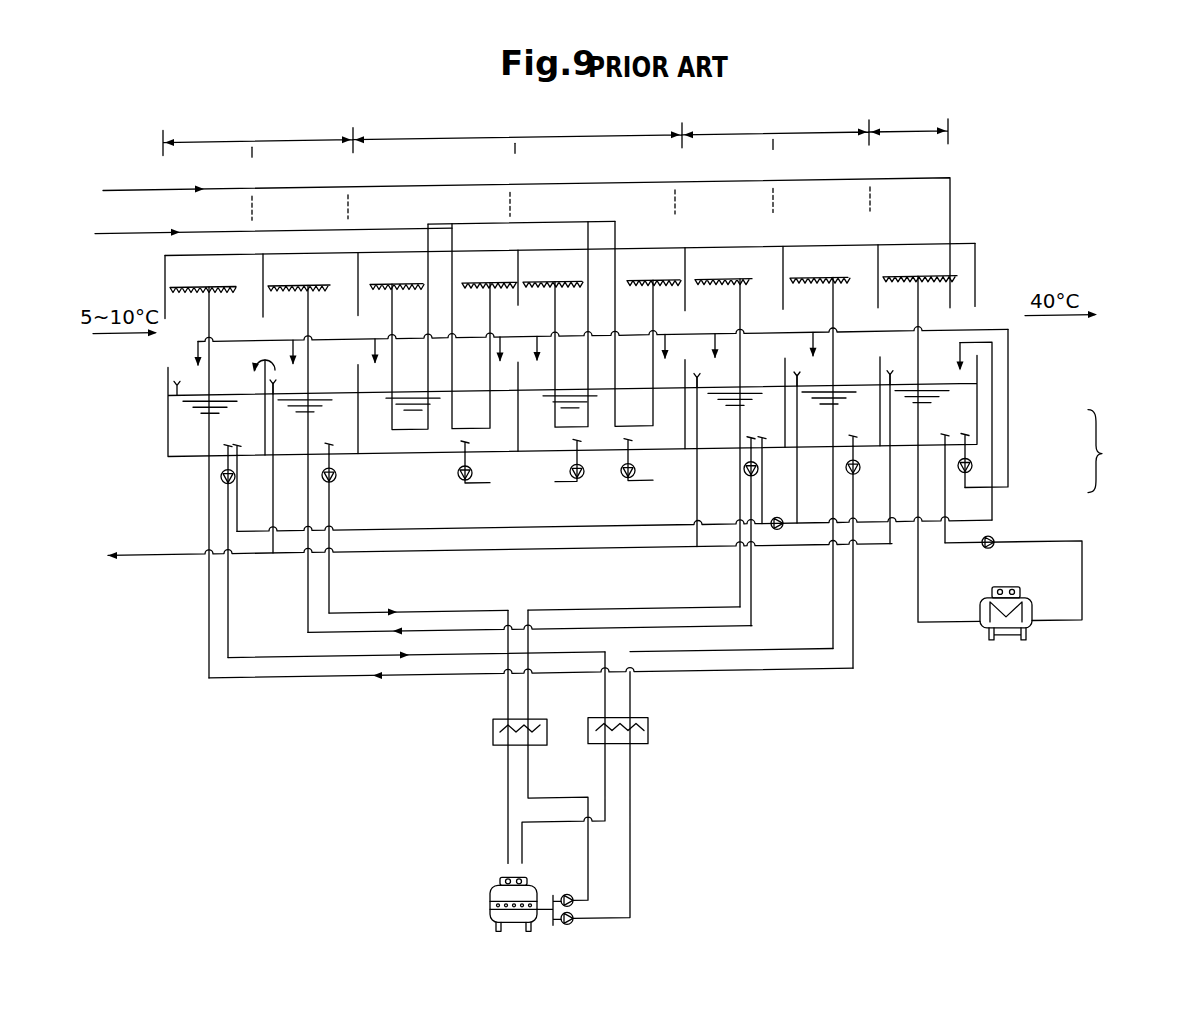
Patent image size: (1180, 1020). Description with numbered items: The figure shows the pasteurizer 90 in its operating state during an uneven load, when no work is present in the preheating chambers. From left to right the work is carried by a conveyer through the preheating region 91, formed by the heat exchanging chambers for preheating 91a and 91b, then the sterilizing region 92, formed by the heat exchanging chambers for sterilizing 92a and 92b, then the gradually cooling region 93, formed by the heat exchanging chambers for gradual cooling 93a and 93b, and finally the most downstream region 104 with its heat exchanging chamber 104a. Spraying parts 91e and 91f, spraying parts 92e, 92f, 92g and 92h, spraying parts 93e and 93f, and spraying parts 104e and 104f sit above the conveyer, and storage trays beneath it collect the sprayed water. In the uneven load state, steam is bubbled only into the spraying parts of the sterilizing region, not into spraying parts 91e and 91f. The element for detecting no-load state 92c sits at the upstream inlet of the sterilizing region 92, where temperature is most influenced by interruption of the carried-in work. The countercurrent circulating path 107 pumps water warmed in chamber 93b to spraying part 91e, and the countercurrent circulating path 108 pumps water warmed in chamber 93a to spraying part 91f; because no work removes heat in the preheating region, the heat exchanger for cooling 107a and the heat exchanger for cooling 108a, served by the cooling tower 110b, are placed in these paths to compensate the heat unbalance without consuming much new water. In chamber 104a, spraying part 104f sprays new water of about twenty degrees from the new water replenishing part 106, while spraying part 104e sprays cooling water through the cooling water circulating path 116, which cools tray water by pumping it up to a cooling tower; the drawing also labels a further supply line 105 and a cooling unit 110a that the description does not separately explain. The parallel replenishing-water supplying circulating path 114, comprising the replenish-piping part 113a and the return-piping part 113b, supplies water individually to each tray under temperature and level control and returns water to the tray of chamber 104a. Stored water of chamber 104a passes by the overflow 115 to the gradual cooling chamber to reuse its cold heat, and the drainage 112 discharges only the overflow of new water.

The pasteurizer 90 is at (997, 290).
The preheating region 91 is at (258, 217).
The heat exchanging chamber for preheating 91a is at (211, 219).
The heat exchanging chamber for preheating 91b is at (299, 221).
The spraying part 91e is at (215, 290).
The spraying part 91f is at (314, 288).
The sterilizing region 92 is at (517, 130).
The heat exchanging chamber for sterilizing 92a is at (443, 216).
The heat exchanging chamber for sterilizing 92b is at (602, 218).
The element for detecting no-load state 92c is at (358, 252).
The spraying part 92e is at (401, 287).
The spraying part 92f is at (466, 286).
The spraying part 92g is at (533, 284).
The spraying part 92h is at (593, 350).
The gradually cooling region 93 is at (775, 210).
The heat exchanging chamber for gradual cooling 93a is at (731, 211).
The heat exchanging chamber for gradual cooling 93b is at (816, 213).
The spraying part 93e is at (706, 289).
The spraying part 93f is at (801, 283).
The most downstream region 104 is at (922, 207).
The heat exchanging chamber of the most downstream region 104a is at (914, 212).
The spraying part 104e is at (906, 276).
The spraying part 104f is at (950, 279).
The water supply line 105 is at (354, 220).
The new water replenishing part 106 is at (134, 189).
The countercurrent circulating path 107 is at (341, 652).
The heat exchanger for cooling 107a is at (648, 733).
The countercurrent circulating path 108 is at (450, 636).
The heat exchanger for cooling 108a is at (493, 741).
The cooling tower 110a is at (1030, 629).
The cooling tower 110b is at (490, 893).
The drainage 112 is at (152, 558).
The replenish-piping part 113a is at (1010, 425).
The return-piping part 113b is at (997, 521).
The parallel replenishing-water supplying circulating path 114 is at (1117, 451).
The overflow 115 is at (794, 360).
The cooling water circulating path 116 is at (1061, 541).